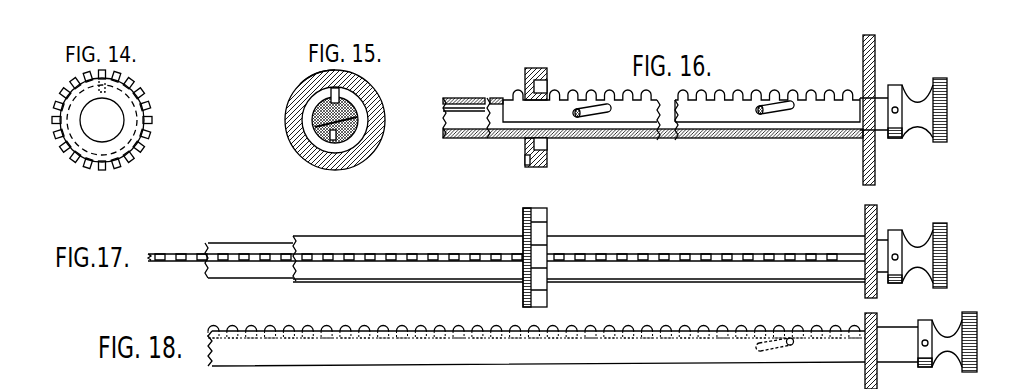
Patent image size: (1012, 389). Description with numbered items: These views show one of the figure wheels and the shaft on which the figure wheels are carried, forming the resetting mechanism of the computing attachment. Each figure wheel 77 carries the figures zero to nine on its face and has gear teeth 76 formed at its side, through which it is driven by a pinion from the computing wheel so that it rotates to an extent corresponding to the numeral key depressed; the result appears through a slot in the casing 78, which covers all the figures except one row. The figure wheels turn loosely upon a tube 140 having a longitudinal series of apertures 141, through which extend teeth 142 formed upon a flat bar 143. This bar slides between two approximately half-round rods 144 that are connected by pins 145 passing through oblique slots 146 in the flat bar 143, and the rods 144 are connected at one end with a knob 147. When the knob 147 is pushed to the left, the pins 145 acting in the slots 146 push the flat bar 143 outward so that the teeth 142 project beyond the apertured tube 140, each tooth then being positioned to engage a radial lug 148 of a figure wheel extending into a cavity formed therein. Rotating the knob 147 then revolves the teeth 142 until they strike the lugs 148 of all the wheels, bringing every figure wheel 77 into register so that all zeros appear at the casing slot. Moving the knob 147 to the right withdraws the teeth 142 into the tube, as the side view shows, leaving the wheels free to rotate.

In FIG. 14, the gear teeth 76 is at (150, 92).
In FIG. 16, the gear teeth 76 is at (526, 162).
In FIG. 17, the gear teeth 76 is at (523, 292).
In FIG. 14, the figure wheel 77 is at (135, 128).
In FIG. 15, the figure wheel 77 is at (345, 165).
In FIG. 16, the figure wheel 77 is at (548, 72).
In FIG. 17, the figure wheel 77 is at (548, 228).
In FIG. 16, the casing 78 is at (876, 72).
In FIG. 17, the casing 78 is at (877, 222).
In FIG. 18, the casing 78 is at (866, 372).
In FIG. 15, the tube 140 is at (358, 118).
In FIG. 16, the tube 140 is at (470, 98).
In FIG. 17, the tube 140 is at (396, 237).
In FIG. 16, the apertures 141 is at (503, 98).
In FIG. 15, the teeth 142 is at (340, 95).
In FIG. 16, the teeth 142 is at (758, 92).
In FIG. 17, the teeth 142 is at (632, 253).
In FIG. 18, the teeth 142 is at (590, 329).
In FIG. 15, the flat bar 143 is at (350, 133).
In FIG. 16, the flat bar 143 is at (681, 110).
In FIG. 17, the flat bar 143 is at (178, 263).
In FIG. 15, the half-round rods 144 is at (305, 140).
In FIG. 16, the half-round rods 144 is at (487, 131).
In FIG. 17, the half-round rods 144 is at (208, 268).
In FIG. 18, the half-round rods 144 is at (536, 348).
In FIG. 15, the pins 145 is at (312, 118).
In FIG. 16, the pins 145 is at (579, 118).
In FIG. 18, the pins 145 is at (794, 343).
In FIG. 16, the oblique slots 146 is at (603, 105).
In FIG. 18, the oblique slots 146 is at (777, 352).
In FIG. 16, the knob 147 is at (948, 108).
In FIG. 17, the knob 147 is at (948, 251).
In FIG. 18, the knob 147 is at (978, 338).
In FIG. 14, the radial lug 148 is at (96, 89).
In FIG. 15, the radial lug 148 is at (305, 85).